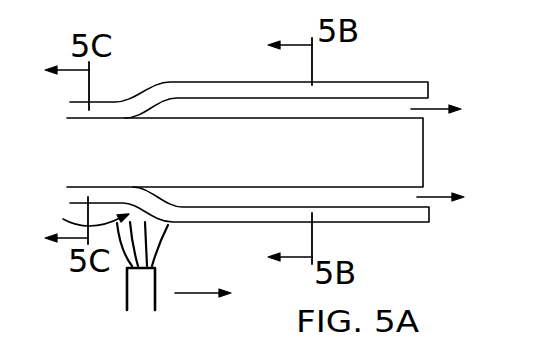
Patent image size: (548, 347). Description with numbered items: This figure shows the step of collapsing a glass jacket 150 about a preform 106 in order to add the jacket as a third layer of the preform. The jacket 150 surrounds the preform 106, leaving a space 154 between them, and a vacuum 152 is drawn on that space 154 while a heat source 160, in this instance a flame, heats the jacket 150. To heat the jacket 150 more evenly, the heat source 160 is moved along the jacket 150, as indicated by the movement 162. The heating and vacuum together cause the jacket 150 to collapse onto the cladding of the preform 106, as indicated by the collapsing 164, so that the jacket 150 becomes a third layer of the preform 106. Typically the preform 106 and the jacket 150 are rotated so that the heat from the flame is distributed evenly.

The preform 106 is at (275, 160).
The jacket 150 is at (381, 90).
The vacuum 152 is at (430, 109).
The space 154 is at (352, 193).
The heat source 160 is at (161, 260).
The movement of heat source 162 is at (189, 295).
The collapsing of jacket onto preform 164 is at (72, 218).